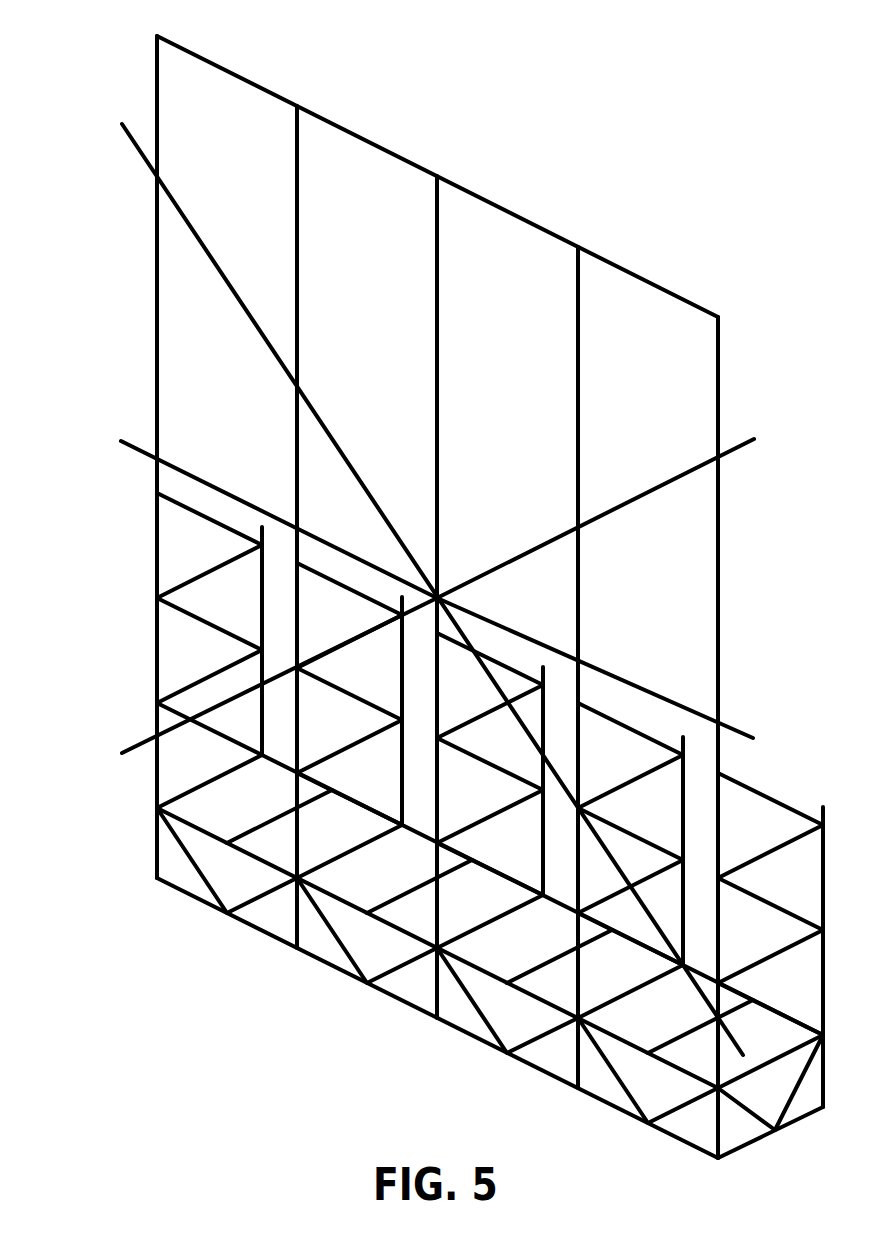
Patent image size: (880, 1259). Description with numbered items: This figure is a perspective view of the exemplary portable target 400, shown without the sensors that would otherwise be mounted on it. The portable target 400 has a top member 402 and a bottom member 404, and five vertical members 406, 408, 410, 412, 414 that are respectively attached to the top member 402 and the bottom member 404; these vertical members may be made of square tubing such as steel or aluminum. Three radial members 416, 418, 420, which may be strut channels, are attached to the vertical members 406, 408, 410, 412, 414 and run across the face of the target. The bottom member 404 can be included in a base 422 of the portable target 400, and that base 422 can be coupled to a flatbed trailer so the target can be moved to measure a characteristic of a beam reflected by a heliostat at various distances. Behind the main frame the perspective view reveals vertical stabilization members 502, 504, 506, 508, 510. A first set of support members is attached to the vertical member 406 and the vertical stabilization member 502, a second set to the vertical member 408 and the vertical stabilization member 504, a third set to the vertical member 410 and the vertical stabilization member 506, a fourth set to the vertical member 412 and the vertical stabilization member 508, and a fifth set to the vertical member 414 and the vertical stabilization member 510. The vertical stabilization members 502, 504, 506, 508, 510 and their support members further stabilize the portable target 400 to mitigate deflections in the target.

The portable target 400 is at (719, 53).
The top member 402 is at (230, 70).
The bottom member 404 is at (266, 935).
The vertical member 406 is at (155, 102).
The vertical member 408 is at (294, 170).
The vertical member 410 is at (435, 237).
The vertical member 412 is at (576, 315).
The vertical member 414 is at (716, 387).
The radial member 416 is at (141, 155).
The radial member 418 is at (133, 446).
The radial member 420 is at (137, 745).
The base 422 is at (139, 843).
The vertical stabilization member 502 is at (261, 620).
The vertical stabilization member 504 is at (401, 690).
The vertical stabilization member 506 is at (542, 765).
The vertical stabilization member 508 is at (682, 832).
The vertical stabilization member 510 is at (822, 900).